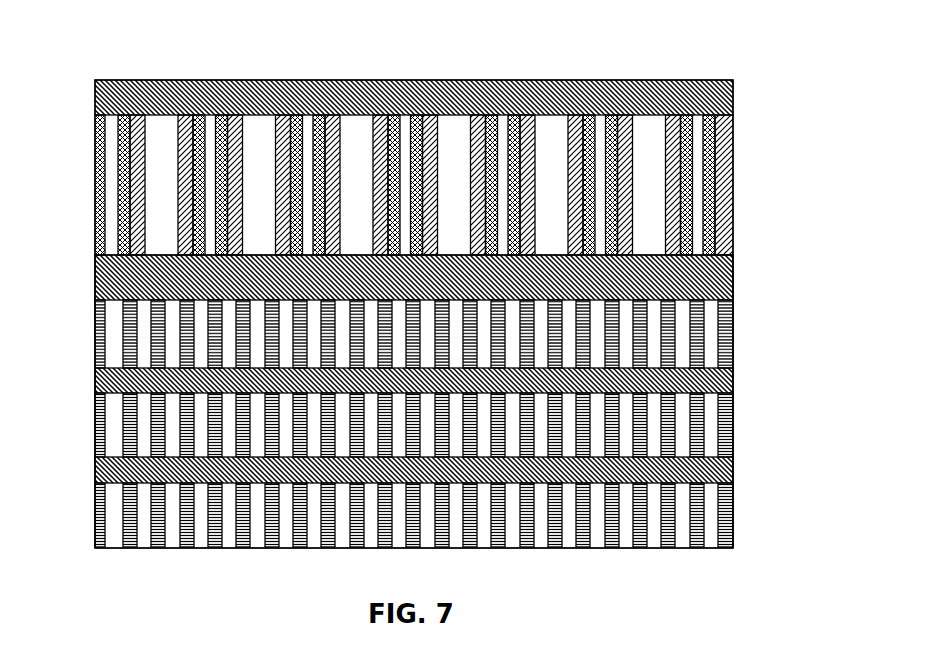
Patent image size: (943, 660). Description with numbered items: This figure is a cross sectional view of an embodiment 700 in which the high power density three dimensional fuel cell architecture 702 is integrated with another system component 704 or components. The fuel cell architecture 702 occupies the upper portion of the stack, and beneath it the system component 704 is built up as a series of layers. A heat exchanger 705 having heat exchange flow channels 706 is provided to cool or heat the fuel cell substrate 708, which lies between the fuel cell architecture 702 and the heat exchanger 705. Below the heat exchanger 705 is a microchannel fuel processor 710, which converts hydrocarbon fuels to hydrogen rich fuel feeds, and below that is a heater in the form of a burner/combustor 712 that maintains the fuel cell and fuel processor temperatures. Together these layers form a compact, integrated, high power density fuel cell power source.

The embodiment 700 is at (205, 50).
The high power density three dimensional fuel cell architecture 702 is at (764, 166).
The system component 704 is at (427, 385).
The heat exchanger 705 is at (752, 334).
The heat exchange flow channels 706 is at (117, 366).
The fuel cell substrate 708 is at (735, 277).
The microchannel fuel processor 710 is at (752, 418).
The burner/combustor 712 is at (752, 512).